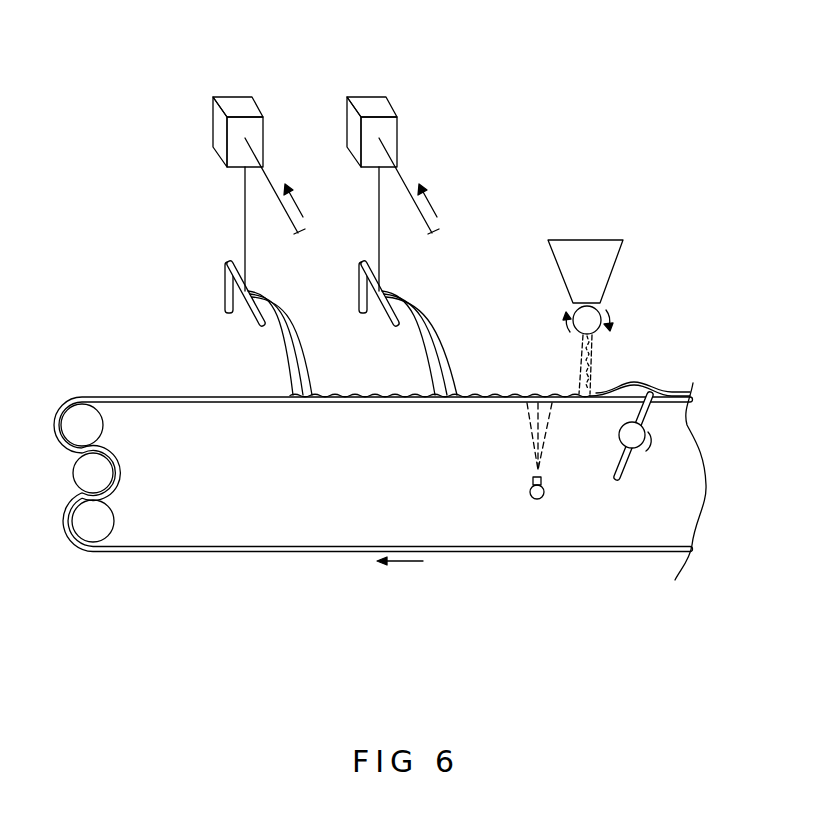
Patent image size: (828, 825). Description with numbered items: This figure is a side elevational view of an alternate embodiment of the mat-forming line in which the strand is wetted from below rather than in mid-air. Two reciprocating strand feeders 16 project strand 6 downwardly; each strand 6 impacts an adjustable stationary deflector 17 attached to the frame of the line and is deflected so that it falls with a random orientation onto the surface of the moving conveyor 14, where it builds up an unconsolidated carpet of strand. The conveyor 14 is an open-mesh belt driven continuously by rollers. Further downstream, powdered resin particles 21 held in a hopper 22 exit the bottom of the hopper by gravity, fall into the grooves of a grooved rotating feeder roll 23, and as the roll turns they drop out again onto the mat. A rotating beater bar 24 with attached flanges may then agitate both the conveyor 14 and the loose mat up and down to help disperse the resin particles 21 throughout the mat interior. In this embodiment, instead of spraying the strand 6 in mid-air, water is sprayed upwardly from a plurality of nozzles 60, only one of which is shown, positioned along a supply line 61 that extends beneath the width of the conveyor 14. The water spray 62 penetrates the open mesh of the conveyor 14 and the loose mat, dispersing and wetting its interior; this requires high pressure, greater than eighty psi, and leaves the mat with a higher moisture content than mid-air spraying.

The strand 6 is at (268, 178).
The conveyor 14 is at (240, 396).
The reciprocating strand feeder 16 is at (220, 90).
The adjustable stationary deflector 17 is at (225, 292).
The powdered resin particles 21 is at (593, 372).
The hopper 22 is at (597, 239).
The grooved rotating feeder roll 23 is at (592, 313).
The rotating beater bar 24 is at (627, 468).
The nozzle 60 is at (543, 478).
The supply line 61 is at (532, 498).
The water spray 62 is at (528, 428).